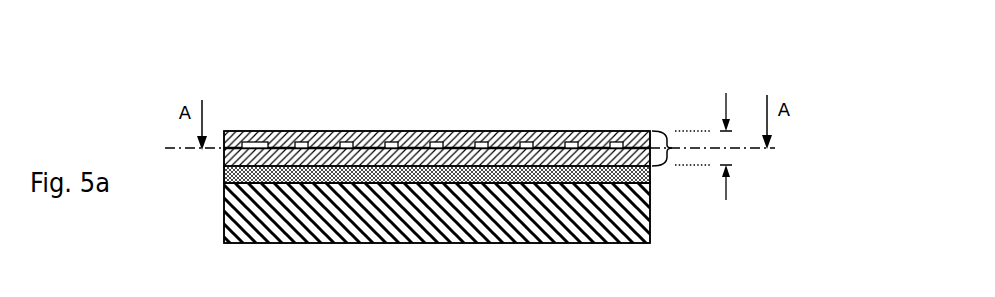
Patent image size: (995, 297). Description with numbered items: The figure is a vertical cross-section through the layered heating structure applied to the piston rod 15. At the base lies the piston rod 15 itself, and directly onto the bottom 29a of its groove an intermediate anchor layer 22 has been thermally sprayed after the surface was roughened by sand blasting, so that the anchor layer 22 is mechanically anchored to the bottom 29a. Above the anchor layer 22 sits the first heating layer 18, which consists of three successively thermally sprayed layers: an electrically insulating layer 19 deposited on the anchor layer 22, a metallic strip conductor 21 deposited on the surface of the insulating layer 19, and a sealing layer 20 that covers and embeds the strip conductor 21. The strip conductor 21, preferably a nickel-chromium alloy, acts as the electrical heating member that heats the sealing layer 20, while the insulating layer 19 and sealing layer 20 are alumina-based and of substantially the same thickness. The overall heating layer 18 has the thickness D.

The piston rod 15 is at (611, 95).
The first heating layer 18 is at (678, 150).
The electrically insulating layer 19 is at (233, 163).
The sealing layer 20 is at (335, 138).
The metallic strip conductor 21 is at (613, 145).
The intermediate anchor layer 22 is at (245, 182).
The bottom of the groove 29a is at (582, 188).